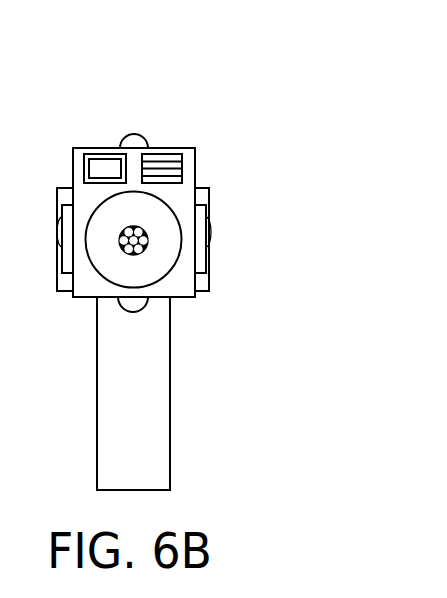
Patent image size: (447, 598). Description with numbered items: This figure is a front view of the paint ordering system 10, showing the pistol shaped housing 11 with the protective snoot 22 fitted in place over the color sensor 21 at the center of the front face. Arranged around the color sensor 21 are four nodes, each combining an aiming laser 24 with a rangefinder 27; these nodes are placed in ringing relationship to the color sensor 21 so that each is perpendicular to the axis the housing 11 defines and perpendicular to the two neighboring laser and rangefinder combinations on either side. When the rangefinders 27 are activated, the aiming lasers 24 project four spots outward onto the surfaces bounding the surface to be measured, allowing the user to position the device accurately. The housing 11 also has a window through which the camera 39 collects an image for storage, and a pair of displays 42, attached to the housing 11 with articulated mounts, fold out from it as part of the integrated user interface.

The system 10 is at (210, 108).
The housing 11 is at (72, 148).
The color sensor 21 is at (297, 250).
The protective snoot 22 is at (139, 255).
The aiming laser 24 is at (172, 205).
The rangefinder 27 is at (152, 142).
The camera 39 is at (96, 160).
The display 42 is at (55, 275).